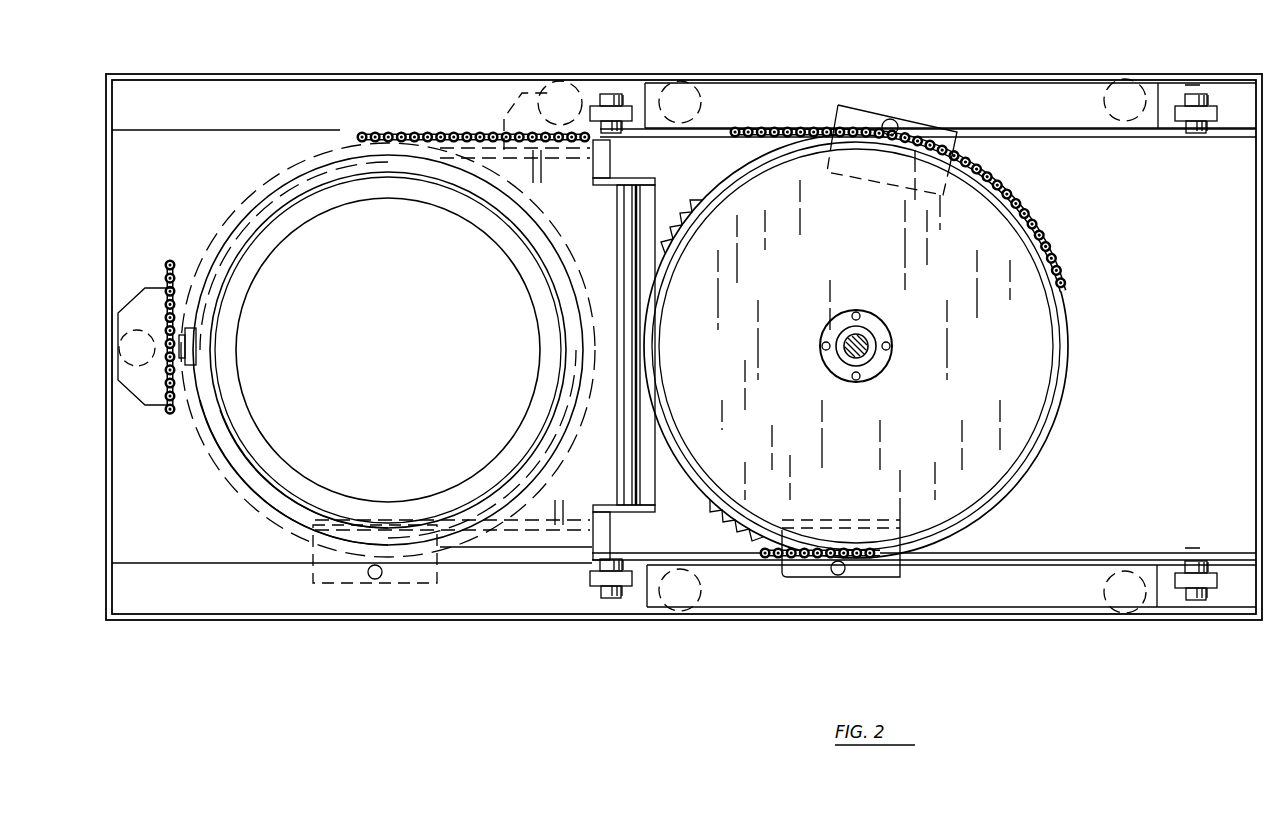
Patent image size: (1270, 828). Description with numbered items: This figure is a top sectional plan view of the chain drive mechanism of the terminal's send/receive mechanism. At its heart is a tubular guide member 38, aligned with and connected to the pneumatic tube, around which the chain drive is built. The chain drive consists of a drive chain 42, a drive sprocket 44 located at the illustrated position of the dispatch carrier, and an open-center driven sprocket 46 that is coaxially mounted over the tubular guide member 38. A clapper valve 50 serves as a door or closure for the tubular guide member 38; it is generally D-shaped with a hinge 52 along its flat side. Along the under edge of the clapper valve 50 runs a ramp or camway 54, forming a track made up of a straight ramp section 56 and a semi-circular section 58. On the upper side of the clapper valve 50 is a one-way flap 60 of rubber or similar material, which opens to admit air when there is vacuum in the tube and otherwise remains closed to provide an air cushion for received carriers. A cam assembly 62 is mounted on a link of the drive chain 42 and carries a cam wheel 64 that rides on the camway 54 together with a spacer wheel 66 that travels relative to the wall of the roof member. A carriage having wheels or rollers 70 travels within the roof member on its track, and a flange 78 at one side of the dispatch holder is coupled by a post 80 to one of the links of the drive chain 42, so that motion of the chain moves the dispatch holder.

The tubular guide member 38 is at (370, 190).
The drive chain 42 is at (765, 135).
The drive sprocket 44 is at (1010, 384).
The open-center driven sprocket 46 is at (215, 240).
The clapper valve 50 is at (260, 458).
The hinge 52 is at (625, 210).
The ramp or camway 54 is at (290, 482).
The straight ramp section 56 is at (548, 160).
The semi-circular section 58 is at (285, 483).
The one-way flap 60 is at (205, 440).
The cam assembly 62 is at (540, 100).
The cam wheel 64 is at (196, 345).
The spacer wheel 66 is at (118, 347).
The wheels or rollers 70 is at (680, 100).
The flange 78 is at (838, 110).
The post 80 is at (890, 120).